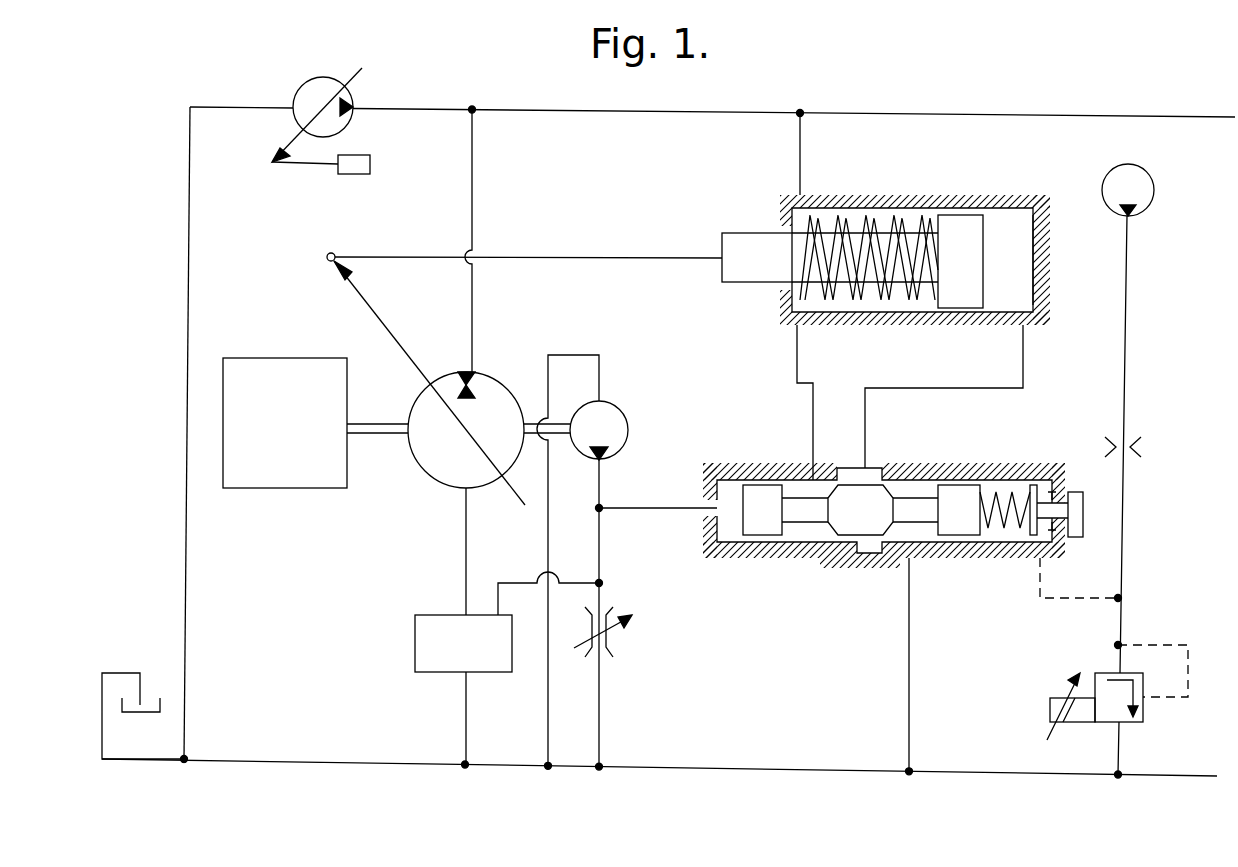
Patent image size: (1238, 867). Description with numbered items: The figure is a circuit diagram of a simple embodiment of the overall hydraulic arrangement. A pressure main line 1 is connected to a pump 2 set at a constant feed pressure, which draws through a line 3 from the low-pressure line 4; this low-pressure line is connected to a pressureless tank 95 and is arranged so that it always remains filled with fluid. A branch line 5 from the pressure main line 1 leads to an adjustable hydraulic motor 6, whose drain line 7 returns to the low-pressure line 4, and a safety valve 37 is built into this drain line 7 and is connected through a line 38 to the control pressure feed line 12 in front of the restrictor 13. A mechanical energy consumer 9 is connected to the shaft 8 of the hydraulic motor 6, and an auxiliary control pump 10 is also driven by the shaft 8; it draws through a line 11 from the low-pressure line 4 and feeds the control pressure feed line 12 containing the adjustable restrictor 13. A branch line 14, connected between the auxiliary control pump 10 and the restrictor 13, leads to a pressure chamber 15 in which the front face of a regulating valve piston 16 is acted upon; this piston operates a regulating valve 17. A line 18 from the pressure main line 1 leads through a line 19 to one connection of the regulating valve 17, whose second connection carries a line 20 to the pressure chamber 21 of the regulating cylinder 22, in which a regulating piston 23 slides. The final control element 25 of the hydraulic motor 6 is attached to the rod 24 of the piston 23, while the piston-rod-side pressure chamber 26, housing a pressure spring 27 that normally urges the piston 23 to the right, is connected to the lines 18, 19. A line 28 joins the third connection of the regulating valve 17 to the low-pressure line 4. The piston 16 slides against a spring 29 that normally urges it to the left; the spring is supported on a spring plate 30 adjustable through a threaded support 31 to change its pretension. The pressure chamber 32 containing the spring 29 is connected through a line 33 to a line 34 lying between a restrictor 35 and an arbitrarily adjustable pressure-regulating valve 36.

The pressure main line 1 is at (413, 107).
The pump 2 is at (296, 94).
The line 3 is at (190, 208).
The low-pressure line 4 is at (334, 762).
The branch line 5 is at (472, 213).
The adjustable hydraulic motor 6 is at (498, 376).
The drain line 7 is at (466, 549).
The shaft 8 is at (380, 423).
The mechanical energy consumer 9 is at (290, 358).
The auxiliary control pump 10 is at (626, 418).
The line 11 is at (548, 717).
The control pressure feed line 12 is at (600, 485).
The adjustable restrictor 13 is at (613, 639).
The branch line 14 is at (660, 508).
The pressure chamber 15 is at (737, 540).
The regulating valve piston 16 is at (858, 545).
The regulating valve 17 is at (945, 545).
The line 18 is at (800, 145).
The line 19 is at (797, 358).
The line 20 is at (912, 388).
The pressure chamber 21 is at (1020, 258).
The regulating cylinder 22 is at (1010, 200).
The regulating piston 23 is at (962, 312).
The rod 24 is at (744, 240).
The final control element 25 is at (390, 322).
The pressure chamber 26 is at (824, 215).
The pressure spring 27 is at (884, 215).
The line 28 is at (909, 720).
The spring 29 is at (1000, 489).
The spring plate 30 is at (1033, 485).
The threaded support 31 is at (1075, 538).
The pressure chamber 32 is at (1014, 548).
The line 33 is at (1088, 598).
The line 34 is at (1124, 356).
The restrictor 35 is at (1142, 445).
The pressure-regulating valve 36 is at (1143, 716).
The safety valve 37 is at (415, 639).
The line 38 is at (516, 582).
The pressureless tank 95 is at (148, 712).